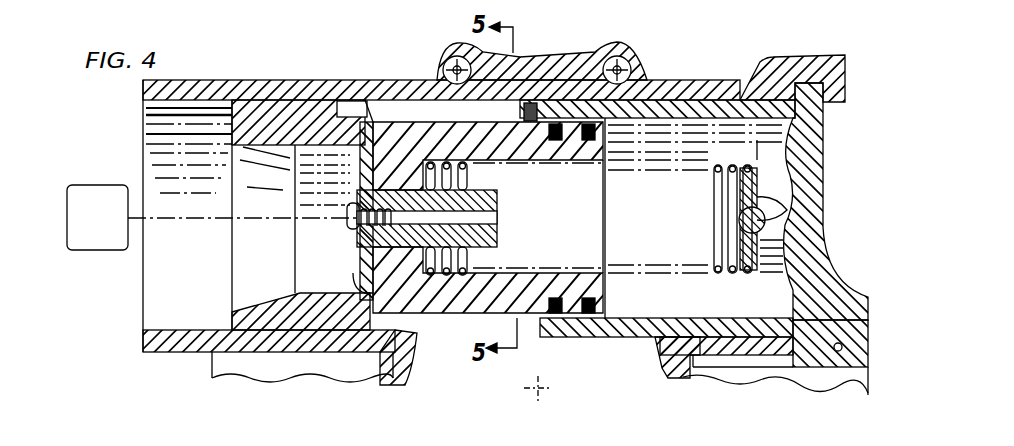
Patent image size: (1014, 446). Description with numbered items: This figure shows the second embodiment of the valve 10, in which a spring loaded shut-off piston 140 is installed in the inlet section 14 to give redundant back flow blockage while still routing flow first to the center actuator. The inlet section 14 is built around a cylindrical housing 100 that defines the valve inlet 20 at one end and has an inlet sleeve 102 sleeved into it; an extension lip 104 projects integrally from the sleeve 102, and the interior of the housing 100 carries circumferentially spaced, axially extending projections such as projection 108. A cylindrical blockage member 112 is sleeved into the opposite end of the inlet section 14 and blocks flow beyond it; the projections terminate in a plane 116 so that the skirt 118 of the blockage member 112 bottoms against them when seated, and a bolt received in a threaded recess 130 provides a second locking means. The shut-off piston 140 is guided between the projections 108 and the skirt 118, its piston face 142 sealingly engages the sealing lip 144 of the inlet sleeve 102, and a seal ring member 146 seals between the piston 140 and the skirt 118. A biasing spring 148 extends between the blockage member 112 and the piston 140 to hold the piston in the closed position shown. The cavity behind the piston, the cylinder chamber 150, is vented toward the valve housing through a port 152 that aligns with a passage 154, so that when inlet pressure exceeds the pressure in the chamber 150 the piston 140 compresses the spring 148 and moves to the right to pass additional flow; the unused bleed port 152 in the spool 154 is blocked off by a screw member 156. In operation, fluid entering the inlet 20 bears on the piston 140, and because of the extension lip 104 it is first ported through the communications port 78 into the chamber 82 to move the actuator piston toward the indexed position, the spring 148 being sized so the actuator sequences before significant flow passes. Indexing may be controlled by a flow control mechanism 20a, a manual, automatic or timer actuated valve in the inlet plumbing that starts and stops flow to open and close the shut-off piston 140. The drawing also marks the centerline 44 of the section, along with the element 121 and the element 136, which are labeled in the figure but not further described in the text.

The valve 10 is at (778, 35).
The inlet section 14 is at (737, 90).
The valve inlet 20 is at (158, 147).
The flow control mechanism 20a is at (118, 232).
The axis 44 is at (532, 388).
The communications port 78 is at (660, 365).
The chamber 82 is at (600, 371).
The cylindrical housing 100 is at (261, 82).
The inlet sleeve 102 is at (303, 100).
The extension lip 104 is at (361, 100).
The projection 108 is at (433, 110).
The blockage member 112 is at (817, 183).
The plane 116 is at (553, 117).
The skirt 118 is at (710, 95).
The plate 121 is at (727, 357).
The threaded recess 130 is at (840, 352).
The seal ring 136 is at (533, 100).
The shut-off piston 140 is at (455, 313).
The piston face 142 is at (370, 288).
The sealing lip 144 is at (373, 295).
The seal ring member 146 is at (603, 311).
The biasing spring 148 is at (725, 273).
The cylinder chamber 150 is at (654, 226).
The port 152 is at (490, 218).
The passage 154 is at (487, 192).
The screw member 156 is at (353, 212).